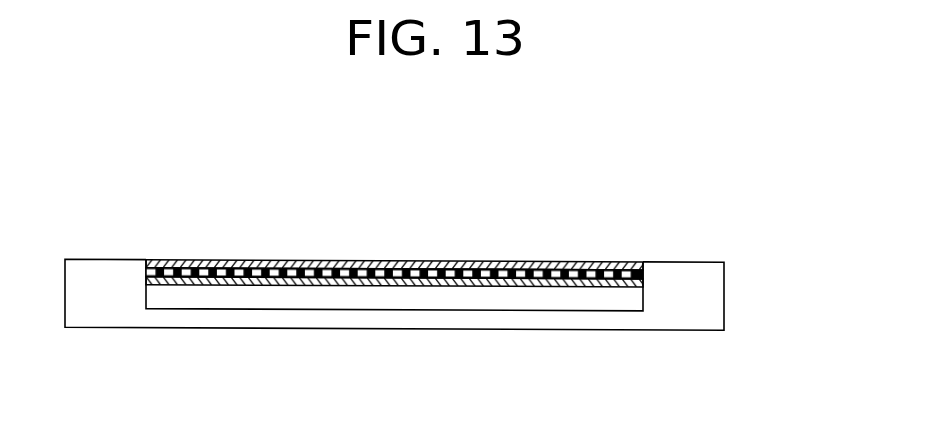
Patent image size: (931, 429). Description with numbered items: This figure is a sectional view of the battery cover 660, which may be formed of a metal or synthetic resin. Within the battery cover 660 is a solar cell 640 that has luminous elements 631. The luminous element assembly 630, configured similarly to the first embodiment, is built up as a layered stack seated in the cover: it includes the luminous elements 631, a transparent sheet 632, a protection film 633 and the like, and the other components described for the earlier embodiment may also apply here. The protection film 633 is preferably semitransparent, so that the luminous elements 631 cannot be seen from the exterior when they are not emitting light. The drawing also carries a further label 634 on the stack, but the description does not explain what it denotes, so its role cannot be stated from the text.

The luminous element assembly 630 is at (394, 224).
The luminous elements 631 is at (383, 195).
The transparent sheet 632 is at (505, 273).
The protection film 633 is at (450, 263).
The light emitting elements 634 is at (397, 272).
The solar cell 640 is at (637, 300).
The battery cover 660 is at (712, 275).